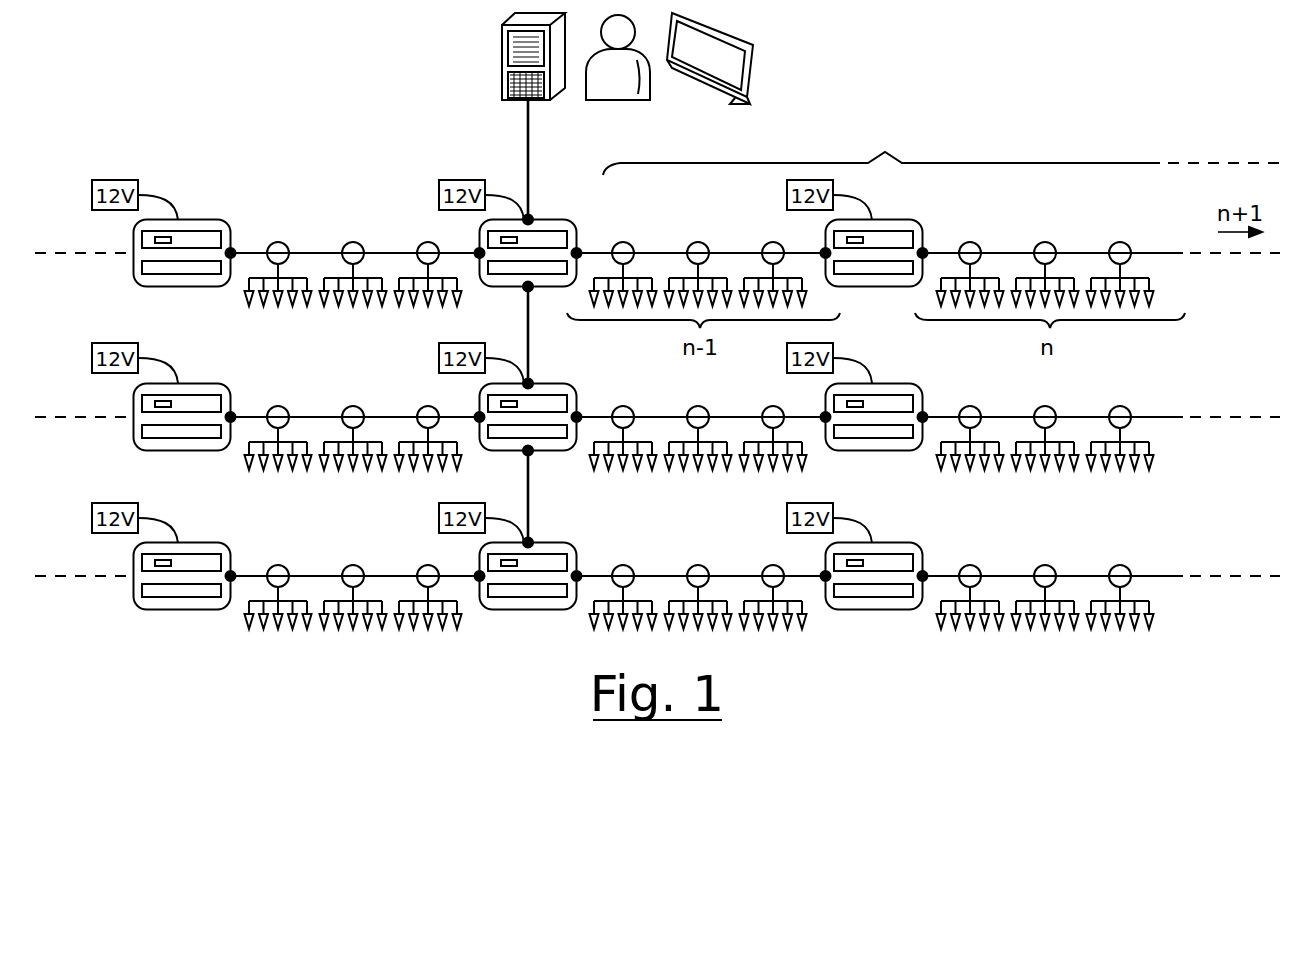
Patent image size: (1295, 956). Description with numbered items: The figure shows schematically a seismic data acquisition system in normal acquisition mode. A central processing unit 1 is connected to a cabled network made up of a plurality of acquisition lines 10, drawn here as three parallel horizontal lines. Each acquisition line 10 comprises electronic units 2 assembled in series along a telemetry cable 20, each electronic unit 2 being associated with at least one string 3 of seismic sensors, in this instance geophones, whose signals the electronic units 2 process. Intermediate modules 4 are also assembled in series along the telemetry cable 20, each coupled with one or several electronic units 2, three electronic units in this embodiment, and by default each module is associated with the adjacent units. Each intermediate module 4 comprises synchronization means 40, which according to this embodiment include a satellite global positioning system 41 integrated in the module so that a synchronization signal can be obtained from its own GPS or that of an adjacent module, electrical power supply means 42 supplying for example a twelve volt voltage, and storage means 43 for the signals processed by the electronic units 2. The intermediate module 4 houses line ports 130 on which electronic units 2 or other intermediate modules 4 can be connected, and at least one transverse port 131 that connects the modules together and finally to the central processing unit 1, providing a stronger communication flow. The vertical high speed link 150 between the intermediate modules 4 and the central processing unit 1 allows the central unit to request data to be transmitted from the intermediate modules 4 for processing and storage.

The central processing unit 1 is at (482, 70).
The electronic unit 2 is at (773, 245).
The string of seismic sensors 3 is at (413, 272).
The intermediate module 4 is at (589, 347).
The acquisition line 10 is at (941, 147).
The telemetry cable 20 is at (593, 252).
The synchronization means 40 is at (892, 232).
The satellite global positioning system 41 is at (848, 235).
The electrical power supply means 42 is at (803, 180).
The storage means 43 is at (912, 270).
The line port 130 is at (243, 244).
The transverse port 131 is at (545, 213).
The high speed link 150 is at (520, 153).